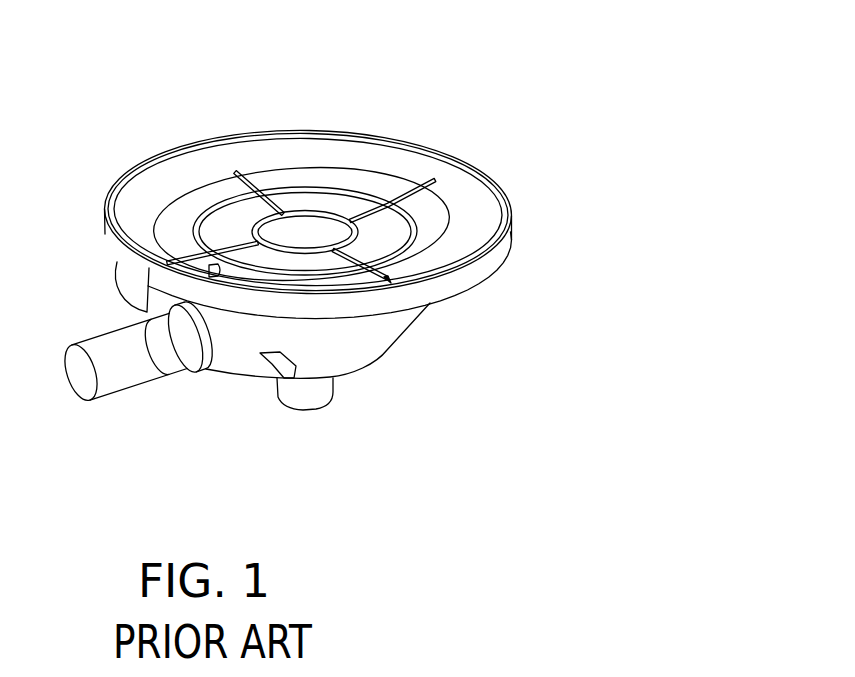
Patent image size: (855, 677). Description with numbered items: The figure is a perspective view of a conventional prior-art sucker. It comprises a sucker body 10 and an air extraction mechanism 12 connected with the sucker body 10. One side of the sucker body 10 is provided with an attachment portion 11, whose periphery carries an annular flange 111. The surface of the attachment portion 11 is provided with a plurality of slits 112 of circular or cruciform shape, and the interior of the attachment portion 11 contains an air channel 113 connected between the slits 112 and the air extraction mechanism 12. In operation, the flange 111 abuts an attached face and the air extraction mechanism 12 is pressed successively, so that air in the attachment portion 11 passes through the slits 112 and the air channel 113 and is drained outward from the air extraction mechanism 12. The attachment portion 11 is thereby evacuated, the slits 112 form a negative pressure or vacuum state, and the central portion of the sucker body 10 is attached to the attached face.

The sucker body 10 is at (447, 123).
The attachment portion 11 is at (333, 160).
The annular flange 111 is at (507, 222).
The slits 112 is at (247, 170).
The air channel 113 is at (214, 283).
The air extraction mechanism 12 is at (177, 352).